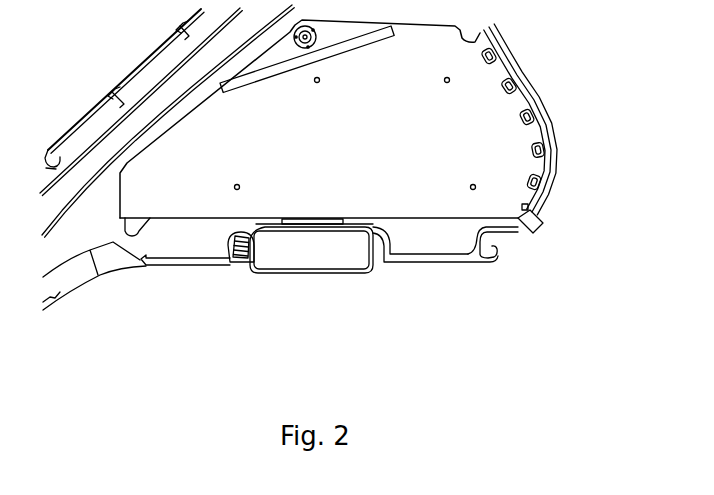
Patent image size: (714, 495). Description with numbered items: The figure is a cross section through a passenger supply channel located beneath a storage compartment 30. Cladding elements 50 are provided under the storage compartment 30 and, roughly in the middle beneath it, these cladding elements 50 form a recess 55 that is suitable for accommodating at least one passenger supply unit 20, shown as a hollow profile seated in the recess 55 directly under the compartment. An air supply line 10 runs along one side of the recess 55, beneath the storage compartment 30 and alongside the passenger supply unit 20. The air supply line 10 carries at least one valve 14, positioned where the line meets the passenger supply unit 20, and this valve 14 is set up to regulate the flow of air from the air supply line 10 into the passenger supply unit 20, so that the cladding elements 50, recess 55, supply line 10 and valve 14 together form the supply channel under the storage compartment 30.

The air supply line 10 is at (221, 243).
The valve 14 is at (247, 260).
The passenger supply unit 20 is at (327, 268).
The storage compartment 30 is at (467, 118).
The cladding elements 50 is at (170, 267).
The recess 55 is at (325, 218).